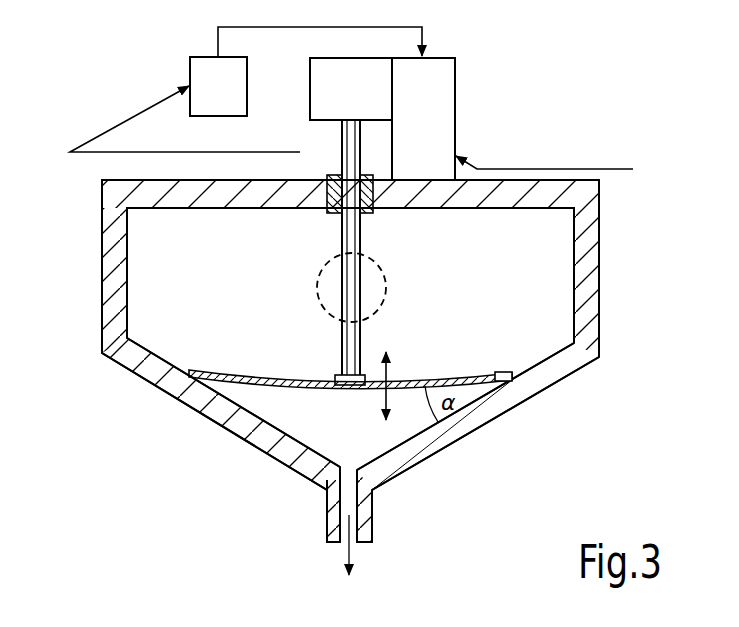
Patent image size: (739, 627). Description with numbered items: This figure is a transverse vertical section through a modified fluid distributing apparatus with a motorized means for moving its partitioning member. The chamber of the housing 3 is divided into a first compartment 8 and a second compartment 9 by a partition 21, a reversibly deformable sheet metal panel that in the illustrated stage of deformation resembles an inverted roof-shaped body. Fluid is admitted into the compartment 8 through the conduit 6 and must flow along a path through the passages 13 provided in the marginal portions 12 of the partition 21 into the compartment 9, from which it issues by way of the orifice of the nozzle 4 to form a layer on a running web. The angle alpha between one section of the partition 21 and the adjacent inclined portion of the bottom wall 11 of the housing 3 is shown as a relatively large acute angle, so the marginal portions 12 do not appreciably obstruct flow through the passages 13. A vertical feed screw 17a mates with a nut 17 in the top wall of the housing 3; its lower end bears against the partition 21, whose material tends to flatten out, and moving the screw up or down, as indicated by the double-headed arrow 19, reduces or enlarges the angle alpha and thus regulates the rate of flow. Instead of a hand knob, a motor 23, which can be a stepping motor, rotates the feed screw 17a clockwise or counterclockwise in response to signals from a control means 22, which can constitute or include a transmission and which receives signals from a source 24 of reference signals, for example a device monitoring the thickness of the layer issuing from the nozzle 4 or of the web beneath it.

The housing 3 is at (118, 265).
The nozzle 4 is at (363, 513).
The conduit 6 is at (372, 288).
The first compartment 8 is at (178, 248).
The second compartment 9 is at (326, 431).
The bottom wall 11 is at (217, 405).
The marginal portion 12 is at (197, 351).
The passage 13 is at (196, 370).
The nut 17 is at (320, 220).
The feed screw 17a is at (352, 233).
The double-headed arrow 19 is at (388, 372).
The partition 21 is at (474, 370).
The control means 22 is at (428, 137).
The motor 23 is at (363, 82).
The source of reference signals 24 is at (210, 80).